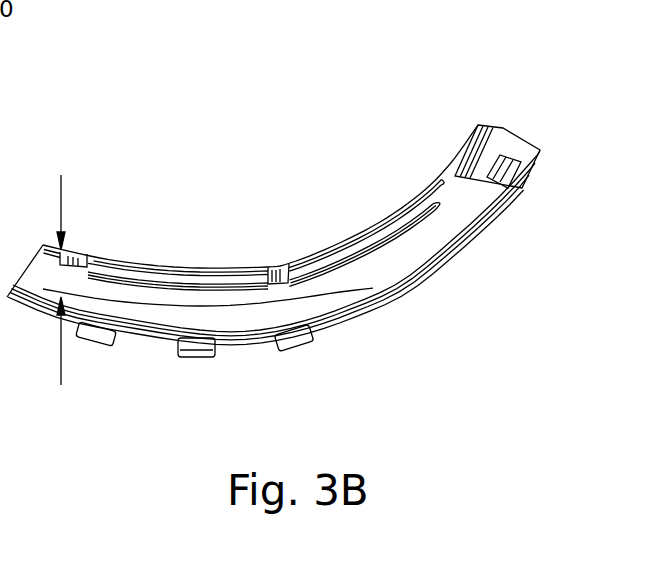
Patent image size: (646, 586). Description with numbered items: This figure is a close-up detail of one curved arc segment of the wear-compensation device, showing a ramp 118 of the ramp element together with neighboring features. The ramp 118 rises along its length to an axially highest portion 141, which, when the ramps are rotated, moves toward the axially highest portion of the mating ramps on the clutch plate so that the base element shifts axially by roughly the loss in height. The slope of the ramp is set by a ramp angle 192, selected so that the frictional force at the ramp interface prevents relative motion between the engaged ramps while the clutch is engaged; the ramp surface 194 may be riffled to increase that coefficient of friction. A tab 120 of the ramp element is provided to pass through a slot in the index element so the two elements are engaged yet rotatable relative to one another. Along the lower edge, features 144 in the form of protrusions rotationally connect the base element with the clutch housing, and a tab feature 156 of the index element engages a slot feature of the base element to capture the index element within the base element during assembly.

The ramp 118 is at (333, 245).
The ramp surface 194 is at (388, 236).
The axially highest portion 141 is at (433, 178).
The tab 120 is at (510, 155).
The ramp angle 192 is at (62, 194).
The feature 144 is at (90, 345).
The tab feature 156 is at (193, 358).